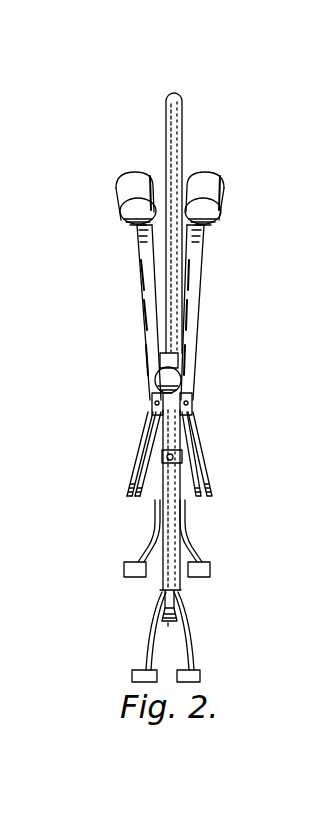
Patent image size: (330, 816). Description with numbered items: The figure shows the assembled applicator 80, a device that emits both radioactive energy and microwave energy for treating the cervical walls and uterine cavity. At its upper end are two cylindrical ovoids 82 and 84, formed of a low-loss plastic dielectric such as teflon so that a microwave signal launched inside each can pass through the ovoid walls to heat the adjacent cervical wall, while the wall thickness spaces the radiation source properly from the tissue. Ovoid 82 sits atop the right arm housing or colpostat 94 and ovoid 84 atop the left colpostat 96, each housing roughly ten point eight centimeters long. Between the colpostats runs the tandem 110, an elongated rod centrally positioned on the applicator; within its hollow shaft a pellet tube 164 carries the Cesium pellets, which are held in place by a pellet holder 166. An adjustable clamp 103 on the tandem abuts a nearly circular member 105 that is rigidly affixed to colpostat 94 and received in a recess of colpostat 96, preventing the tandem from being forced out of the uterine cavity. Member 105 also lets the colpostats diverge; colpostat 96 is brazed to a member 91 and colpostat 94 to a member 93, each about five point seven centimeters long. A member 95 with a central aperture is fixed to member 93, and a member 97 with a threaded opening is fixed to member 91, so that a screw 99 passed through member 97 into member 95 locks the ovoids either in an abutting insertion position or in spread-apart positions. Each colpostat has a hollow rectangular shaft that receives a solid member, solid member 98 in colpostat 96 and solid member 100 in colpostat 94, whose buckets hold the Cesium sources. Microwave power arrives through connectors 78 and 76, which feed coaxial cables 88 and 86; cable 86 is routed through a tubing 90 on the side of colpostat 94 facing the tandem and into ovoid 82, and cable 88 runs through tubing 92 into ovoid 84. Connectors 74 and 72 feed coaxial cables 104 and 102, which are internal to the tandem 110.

The applicator 80 is at (87, 181).
The tandem 110 is at (182, 93).
The ovoid 84 is at (130, 172).
The ovoid 82 is at (208, 172).
The tubing 92 is at (137, 232).
The tubing 90 is at (199, 228).
The left arm housing (colpostat) 96 is at (140, 262).
The right arm housing (colpostat) 94 is at (204, 278).
The adjustable clamp 103 is at (178, 356).
The nearly circular member 105 is at (176, 372).
The member 97 is at (158, 447).
The member 95 is at (183, 447).
The screw 99 is at (165, 461).
The solid member 100 is at (188, 460).
The solid member 98 is at (133, 477).
The member 93 is at (207, 478).
The member 91 is at (128, 488).
The coaxial cable 88 is at (146, 538).
The coaxial cable 86 is at (192, 541).
The microwave connector 78 is at (124, 568).
The microwave connector 76 is at (210, 568).
The pellet tube 164 is at (177, 611).
The pellet holder 166 is at (162, 632).
The coaxial cable 104 is at (150, 641).
The coaxial cable 102 is at (192, 646).
The microwave connector 74 is at (132, 672).
The microwave connector 72 is at (200, 672).